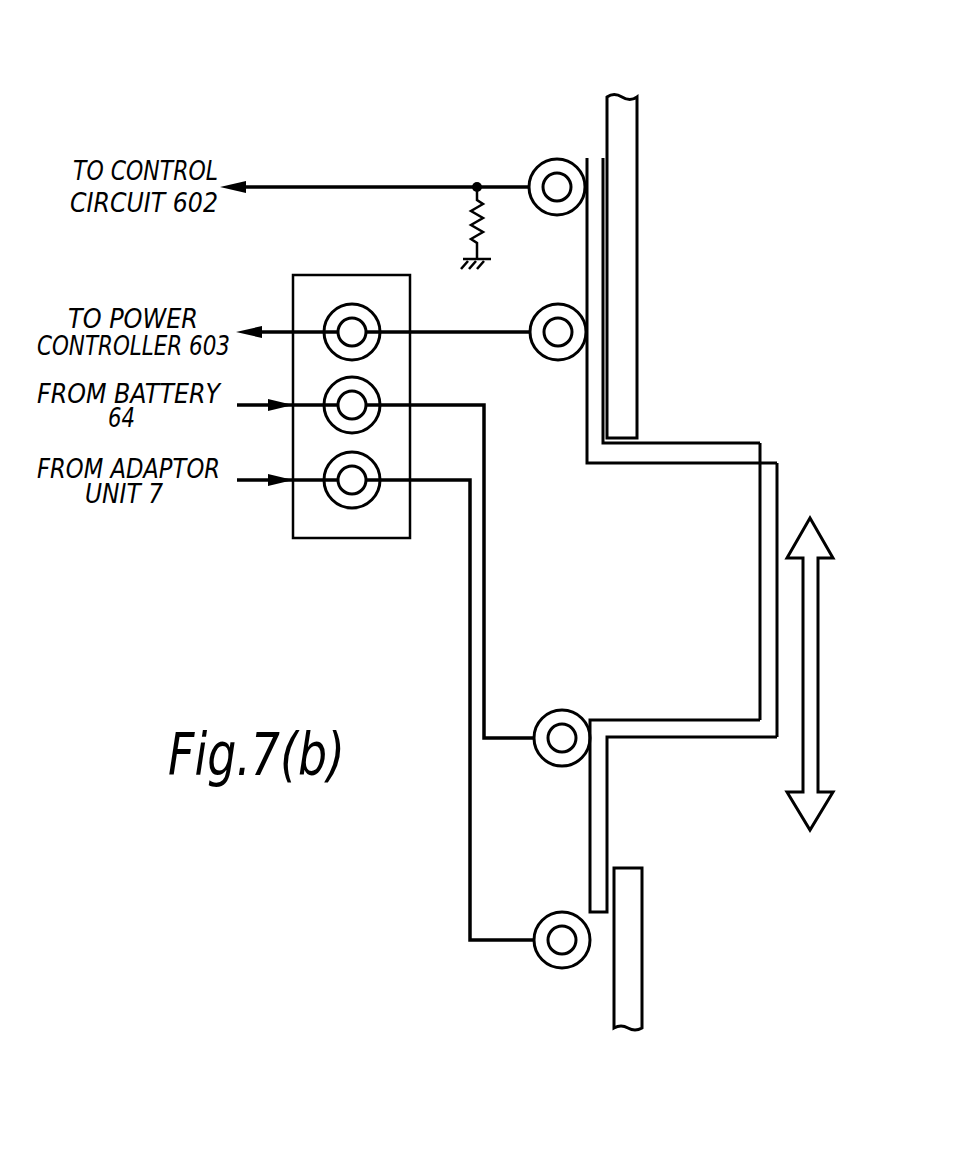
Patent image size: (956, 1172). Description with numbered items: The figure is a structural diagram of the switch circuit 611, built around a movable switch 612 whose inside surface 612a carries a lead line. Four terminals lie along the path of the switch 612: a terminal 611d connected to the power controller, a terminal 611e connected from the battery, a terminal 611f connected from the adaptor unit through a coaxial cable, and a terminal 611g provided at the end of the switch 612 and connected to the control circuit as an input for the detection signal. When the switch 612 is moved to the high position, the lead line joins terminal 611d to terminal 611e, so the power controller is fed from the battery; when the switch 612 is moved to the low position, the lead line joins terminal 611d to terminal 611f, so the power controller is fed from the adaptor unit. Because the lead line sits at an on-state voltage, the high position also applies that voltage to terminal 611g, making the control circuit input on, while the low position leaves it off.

The switch circuit 611 is at (730, 223).
The terminal 611g is at (545, 160).
The terminal 611d is at (555, 362).
The terminal 611e is at (551, 710).
The terminal 611f is at (559, 968).
The switch 612 is at (697, 443).
The inside surface 612a is at (760, 612).